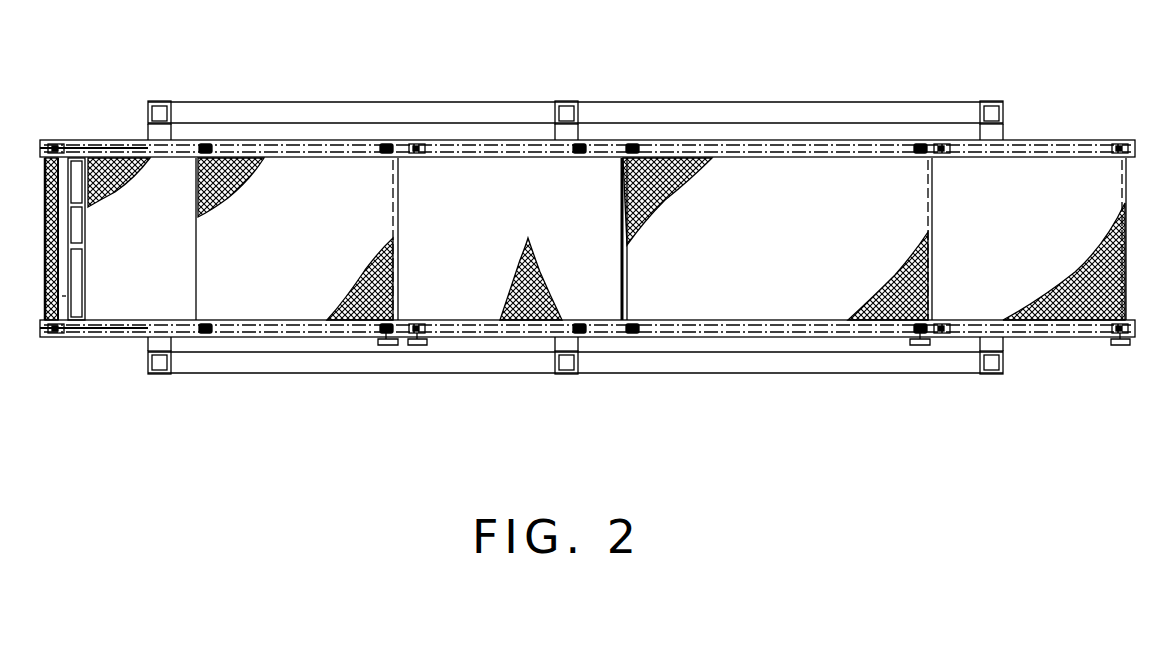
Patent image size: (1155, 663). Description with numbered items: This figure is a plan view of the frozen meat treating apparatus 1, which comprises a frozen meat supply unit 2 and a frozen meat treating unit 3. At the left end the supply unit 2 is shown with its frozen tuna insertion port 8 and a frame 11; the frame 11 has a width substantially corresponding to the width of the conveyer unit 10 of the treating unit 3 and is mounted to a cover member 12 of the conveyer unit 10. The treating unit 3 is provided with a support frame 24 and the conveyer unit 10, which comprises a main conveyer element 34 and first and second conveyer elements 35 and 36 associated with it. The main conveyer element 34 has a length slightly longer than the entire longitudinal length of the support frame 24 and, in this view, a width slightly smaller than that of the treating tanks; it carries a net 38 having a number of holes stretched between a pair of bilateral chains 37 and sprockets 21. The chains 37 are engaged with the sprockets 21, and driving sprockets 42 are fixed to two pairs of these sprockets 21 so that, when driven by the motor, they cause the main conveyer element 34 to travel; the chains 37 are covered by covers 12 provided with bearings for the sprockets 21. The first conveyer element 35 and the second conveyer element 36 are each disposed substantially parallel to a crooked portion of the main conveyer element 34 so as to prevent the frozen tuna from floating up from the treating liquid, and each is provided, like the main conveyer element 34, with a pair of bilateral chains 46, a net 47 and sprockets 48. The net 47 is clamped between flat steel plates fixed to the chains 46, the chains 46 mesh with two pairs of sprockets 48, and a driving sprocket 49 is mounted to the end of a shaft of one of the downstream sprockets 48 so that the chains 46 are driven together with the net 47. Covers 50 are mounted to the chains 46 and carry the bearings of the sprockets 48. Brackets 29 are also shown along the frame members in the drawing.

The frozen meat treating apparatus 1 is at (603, 88).
The frozen meat supply unit 2 is at (120, 239).
The frozen meat treating unit 3 is at (432, 102).
The frozen tuna insertion port 8 is at (86, 270).
The conveyer unit 10 is at (488, 158).
The frame 11 is at (63, 302).
The cover member 12 is at (97, 138).
The sprockets 21 is at (58, 144).
The support frame 24 is at (1003, 132).
The roller bracket 29 is at (162, 102).
The main conveyer element 34 is at (138, 302).
The first conveyer element 35 is at (282, 302).
The second conveyer element 36 is at (812, 302).
The bilateral chains 37 is at (113, 152).
The net 38 is at (126, 181).
The driving sprockets 42 is at (420, 346).
The bilateral chains 46 is at (330, 150).
The net 47 is at (240, 190).
The sprockets 48 is at (206, 144).
The driving sprocket 49 is at (390, 346).
The covers 50 is at (272, 140).